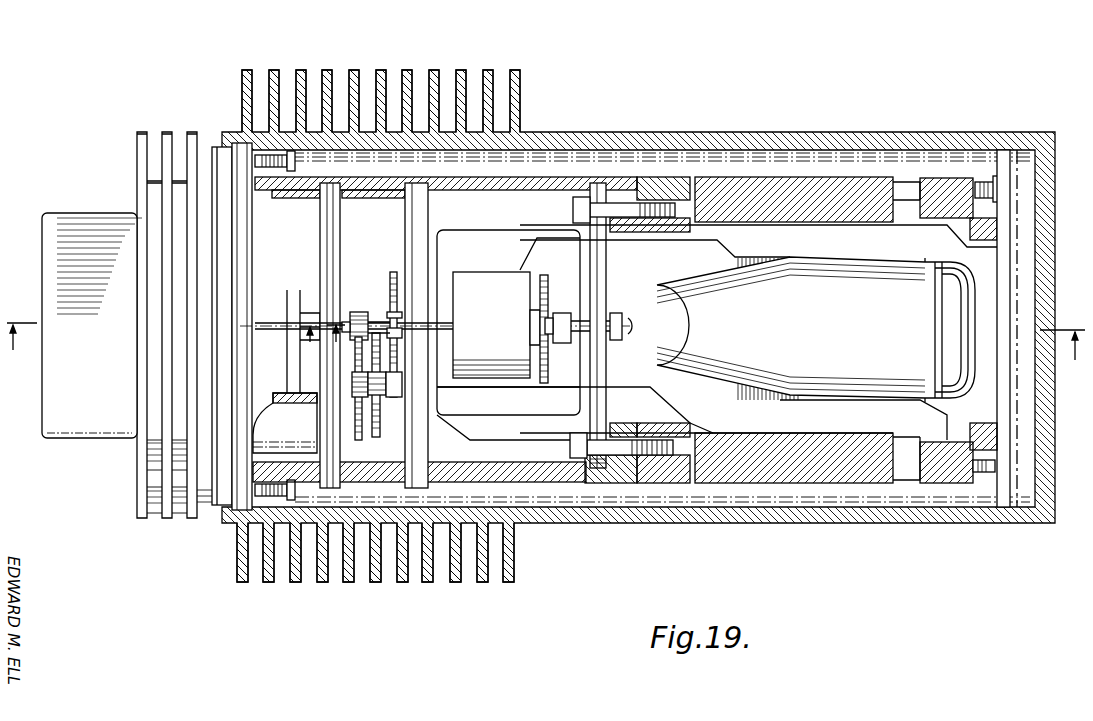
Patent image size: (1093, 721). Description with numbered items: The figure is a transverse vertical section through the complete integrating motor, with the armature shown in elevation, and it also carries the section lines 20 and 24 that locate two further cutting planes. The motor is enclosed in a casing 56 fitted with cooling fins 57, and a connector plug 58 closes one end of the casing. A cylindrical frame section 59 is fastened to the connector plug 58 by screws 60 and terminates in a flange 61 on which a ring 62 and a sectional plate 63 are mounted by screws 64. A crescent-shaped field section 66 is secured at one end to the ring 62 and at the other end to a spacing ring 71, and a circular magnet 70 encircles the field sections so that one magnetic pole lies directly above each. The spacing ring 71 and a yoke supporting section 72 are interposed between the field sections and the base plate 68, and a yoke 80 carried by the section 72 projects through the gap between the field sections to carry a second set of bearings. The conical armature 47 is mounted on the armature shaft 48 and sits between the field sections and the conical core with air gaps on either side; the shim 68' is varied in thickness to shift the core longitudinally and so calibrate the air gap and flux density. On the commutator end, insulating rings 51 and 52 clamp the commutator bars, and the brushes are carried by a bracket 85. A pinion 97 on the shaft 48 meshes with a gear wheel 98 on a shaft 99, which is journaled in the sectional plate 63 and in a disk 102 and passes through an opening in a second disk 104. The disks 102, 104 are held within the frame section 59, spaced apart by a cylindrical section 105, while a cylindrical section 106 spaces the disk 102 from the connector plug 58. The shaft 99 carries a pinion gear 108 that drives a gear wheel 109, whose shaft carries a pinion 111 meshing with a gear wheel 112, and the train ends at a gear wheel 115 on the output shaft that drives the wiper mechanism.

The section line 20- 20 is at (706, 355).
The section line 24- 24 is at (162, 349).
The armature 47 is at (852, 293).
The armature shaft 48 is at (640, 330).
The insulating ring 51 is at (614, 313).
The insulating ring 52 is at (560, 313).
The casing 56 is at (797, 135).
The cooling fins 57 is at (335, 72).
The connector plug 58 is at (78, 218).
The cylindrical frame section 59 is at (553, 178).
The screws 60 is at (295, 491).
The flange 61 is at (626, 472).
The ring 62 is at (672, 478).
The sectional plate 63 is at (597, 190).
The screws 64 is at (570, 446).
The field section 66 is at (785, 265).
The base plate 68 is at (972, 177).
The shim 68' is at (980, 158).
The circular magnet 70 is at (838, 478).
The spacing ring 71 is at (960, 480).
The yoke supporting section 72 is at (985, 478).
The yoke 80 is at (860, 328).
The bracket 85 is at (483, 275).
The pinion 97 is at (530, 318).
The gear wheel 98 is at (536, 382).
The shaft 99 is at (498, 328).
The disk 102 is at (333, 227).
The disk 104 is at (417, 237).
The cylindrical section 105 is at (368, 470).
The cylindrical section 106 is at (286, 371).
The pinion gear 108 is at (357, 313).
The gear wheel 109 is at (359, 440).
The pinion 111 is at (379, 400).
The gear wheel 112 is at (377, 427).
The gear wheel 115 is at (393, 273).